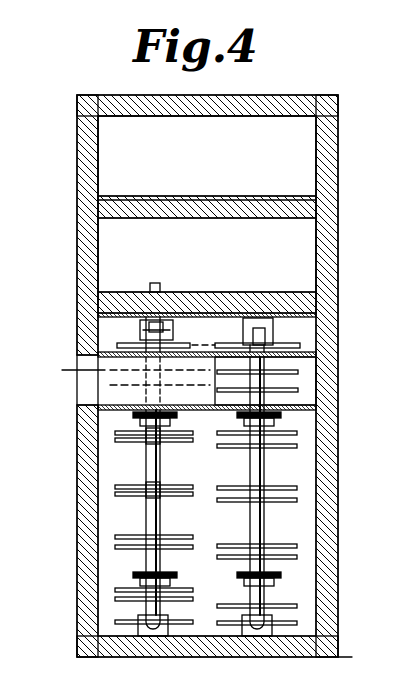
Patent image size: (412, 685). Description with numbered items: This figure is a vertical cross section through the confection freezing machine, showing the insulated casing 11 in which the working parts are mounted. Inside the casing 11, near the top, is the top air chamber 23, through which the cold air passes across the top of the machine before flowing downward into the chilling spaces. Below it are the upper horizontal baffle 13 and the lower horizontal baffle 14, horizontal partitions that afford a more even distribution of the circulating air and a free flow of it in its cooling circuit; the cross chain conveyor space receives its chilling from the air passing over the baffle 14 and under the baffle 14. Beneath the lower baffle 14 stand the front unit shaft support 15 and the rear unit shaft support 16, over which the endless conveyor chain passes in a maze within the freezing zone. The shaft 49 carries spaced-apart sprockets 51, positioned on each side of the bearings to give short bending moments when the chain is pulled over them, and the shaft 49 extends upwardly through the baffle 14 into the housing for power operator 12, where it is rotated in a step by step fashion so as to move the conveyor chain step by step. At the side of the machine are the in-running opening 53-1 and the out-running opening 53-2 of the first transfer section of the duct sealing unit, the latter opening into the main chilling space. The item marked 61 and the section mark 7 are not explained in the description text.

The casing 11 is at (338, 277).
The housing for power operator 12 is at (230, 249).
The upper horizontal baffle 13 is at (262, 196).
The lower horizontal baffle 14 is at (237, 315).
The front unit shaft support 15 is at (163, 531).
The rear unit shaft support 16 is at (267, 531).
The top air chamber 23 is at (200, 161).
The shaft 49 is at (155, 283).
The sprockets 51 is at (170, 485).
The in-running opening 53-1 is at (88, 385).
The out-running opening 53-2 is at (306, 374).
The drive mechanism 61 is at (168, 325).
The section line 7 is at (125, 328).